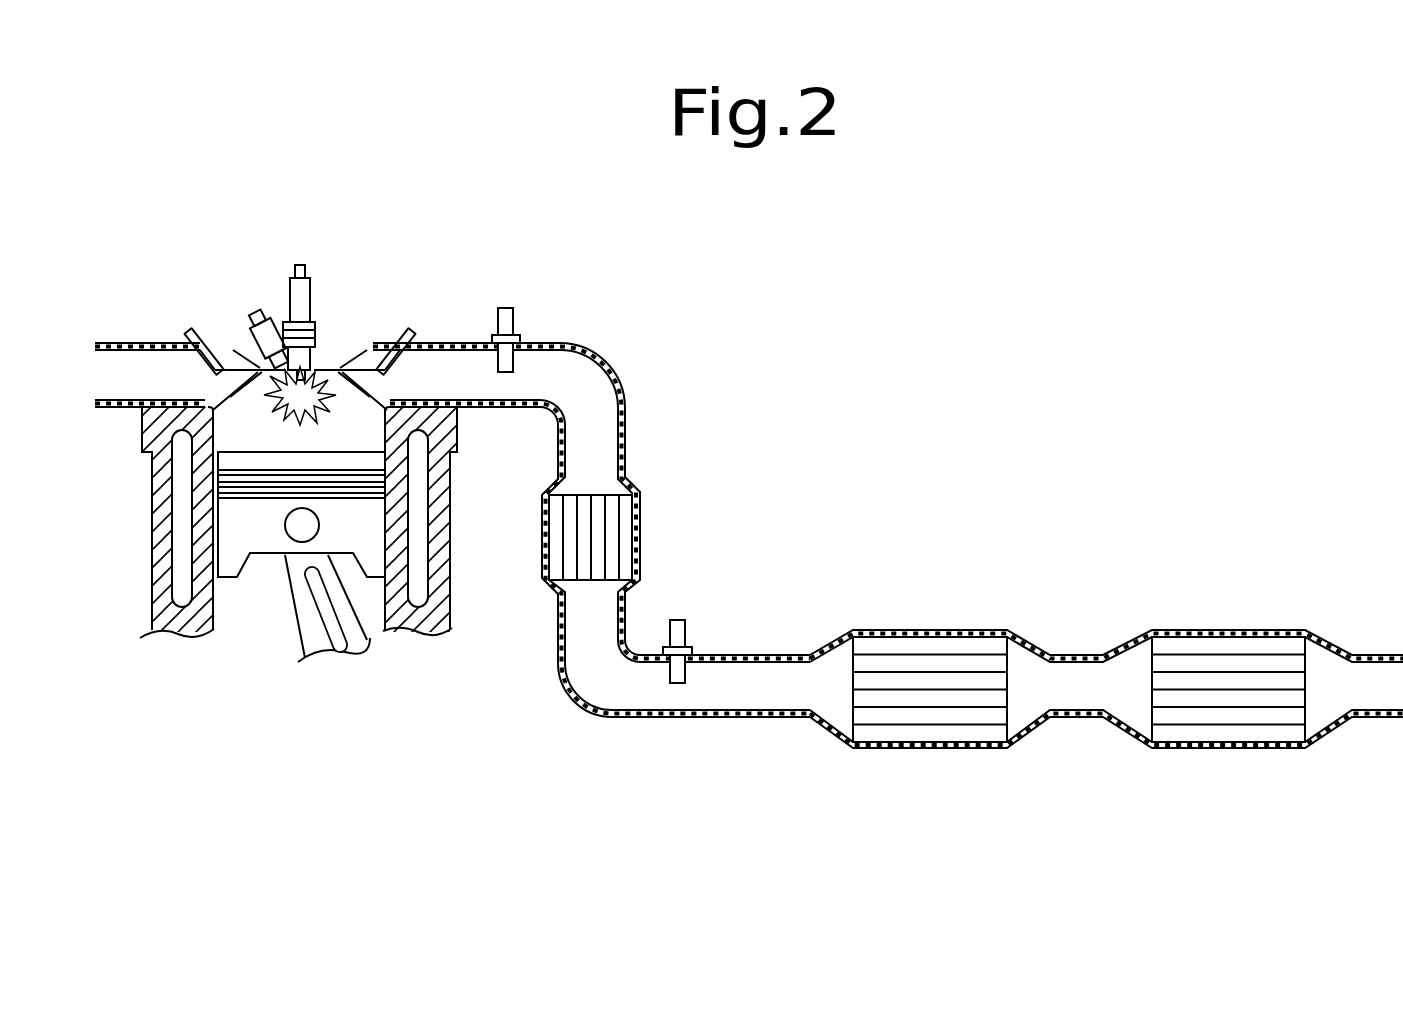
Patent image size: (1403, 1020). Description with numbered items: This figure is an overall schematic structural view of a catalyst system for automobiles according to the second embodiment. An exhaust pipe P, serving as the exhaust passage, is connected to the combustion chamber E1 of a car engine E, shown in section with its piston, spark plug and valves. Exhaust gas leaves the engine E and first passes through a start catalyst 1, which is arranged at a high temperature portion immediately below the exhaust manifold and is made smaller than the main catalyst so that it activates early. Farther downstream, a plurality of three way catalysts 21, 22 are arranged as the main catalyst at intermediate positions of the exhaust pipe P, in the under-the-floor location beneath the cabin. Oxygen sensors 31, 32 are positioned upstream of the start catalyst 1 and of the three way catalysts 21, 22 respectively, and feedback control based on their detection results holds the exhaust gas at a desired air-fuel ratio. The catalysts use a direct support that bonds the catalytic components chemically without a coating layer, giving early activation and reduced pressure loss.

The car engine E is at (237, 328).
The combustion chamber E1 is at (342, 423).
The start catalyst 1 is at (627, 527).
The three way catalyst 21 is at (923, 657).
The three way catalyst 22 is at (1225, 657).
The oxygen sensor 31 is at (504, 318).
The oxygen sensor 32 is at (673, 620).
The exhaust pipe P is at (712, 718).